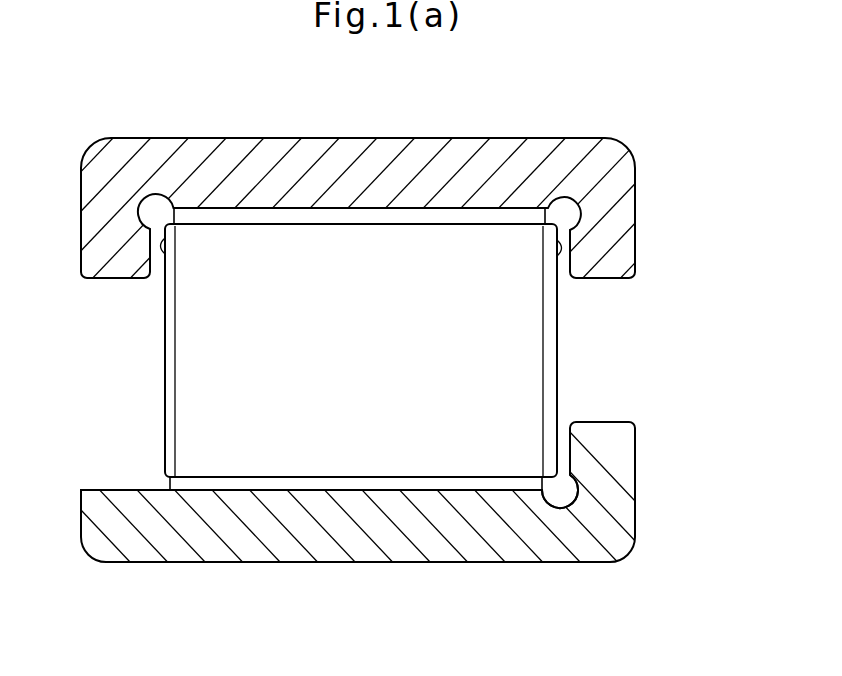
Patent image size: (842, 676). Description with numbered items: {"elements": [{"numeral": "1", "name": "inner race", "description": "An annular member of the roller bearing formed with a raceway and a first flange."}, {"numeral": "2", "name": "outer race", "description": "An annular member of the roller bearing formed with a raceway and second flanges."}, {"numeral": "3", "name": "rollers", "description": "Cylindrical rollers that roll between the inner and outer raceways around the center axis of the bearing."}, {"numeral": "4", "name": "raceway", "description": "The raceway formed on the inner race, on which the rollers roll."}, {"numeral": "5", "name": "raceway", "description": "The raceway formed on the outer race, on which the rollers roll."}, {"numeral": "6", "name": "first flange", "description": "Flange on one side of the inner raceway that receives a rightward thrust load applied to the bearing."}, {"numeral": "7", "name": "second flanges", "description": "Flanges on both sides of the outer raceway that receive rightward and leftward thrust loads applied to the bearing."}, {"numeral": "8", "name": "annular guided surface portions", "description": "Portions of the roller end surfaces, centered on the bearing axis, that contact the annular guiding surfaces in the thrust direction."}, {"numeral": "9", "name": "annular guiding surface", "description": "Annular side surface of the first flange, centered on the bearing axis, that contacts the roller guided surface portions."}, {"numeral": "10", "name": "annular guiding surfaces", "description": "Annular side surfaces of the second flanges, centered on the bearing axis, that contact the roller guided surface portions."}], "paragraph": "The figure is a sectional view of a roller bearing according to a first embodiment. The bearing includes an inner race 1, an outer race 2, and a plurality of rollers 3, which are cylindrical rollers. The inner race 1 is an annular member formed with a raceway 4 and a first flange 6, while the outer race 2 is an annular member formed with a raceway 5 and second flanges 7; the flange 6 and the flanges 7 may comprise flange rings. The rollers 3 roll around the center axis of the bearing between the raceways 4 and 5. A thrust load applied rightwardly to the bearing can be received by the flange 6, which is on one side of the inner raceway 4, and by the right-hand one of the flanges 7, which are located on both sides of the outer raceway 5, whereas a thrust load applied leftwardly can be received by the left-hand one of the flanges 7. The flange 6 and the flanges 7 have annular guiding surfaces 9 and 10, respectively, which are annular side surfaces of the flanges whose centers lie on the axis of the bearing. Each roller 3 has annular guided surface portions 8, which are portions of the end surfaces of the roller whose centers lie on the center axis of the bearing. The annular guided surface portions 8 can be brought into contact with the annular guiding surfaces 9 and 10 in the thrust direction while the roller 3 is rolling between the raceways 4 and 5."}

The bottom housing plate 1 is at (432, 535).
The top housing plate 2 is at (388, 152).
The body 3 is at (210, 398).
The lower plate 4 is at (313, 489).
The upper plate 5 is at (330, 215).
The protrusion 6 is at (600, 442).
The foot portion 7 is at (115, 252).
The lip 8 is at (162, 246).
The groove 9 is at (583, 494).
The gap 10 is at (158, 268).